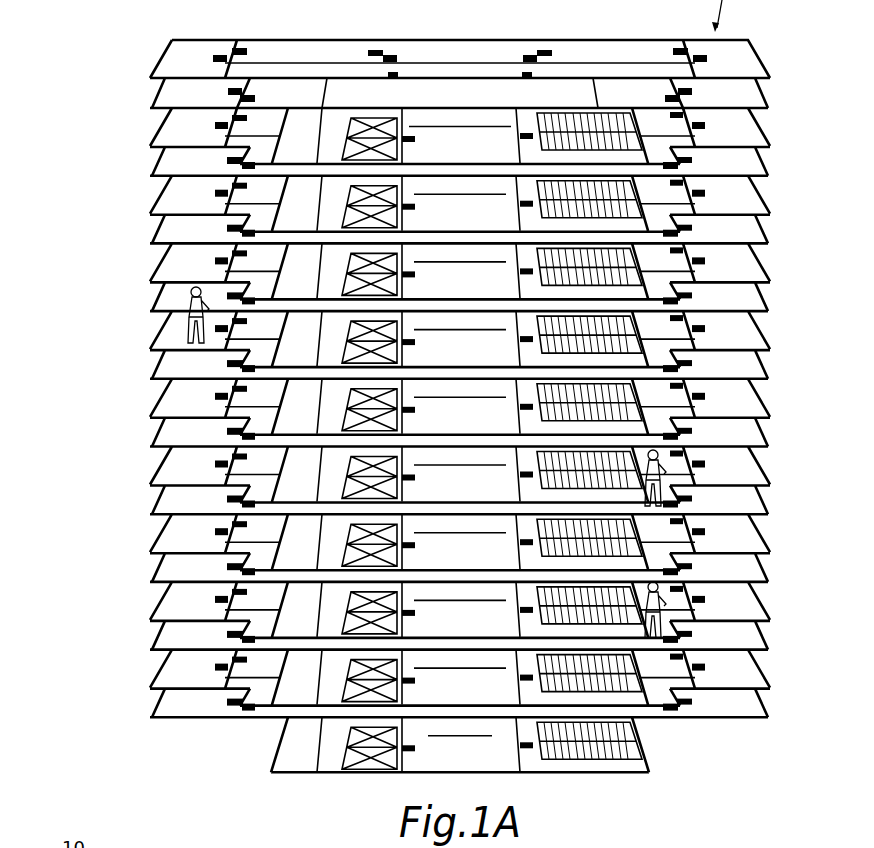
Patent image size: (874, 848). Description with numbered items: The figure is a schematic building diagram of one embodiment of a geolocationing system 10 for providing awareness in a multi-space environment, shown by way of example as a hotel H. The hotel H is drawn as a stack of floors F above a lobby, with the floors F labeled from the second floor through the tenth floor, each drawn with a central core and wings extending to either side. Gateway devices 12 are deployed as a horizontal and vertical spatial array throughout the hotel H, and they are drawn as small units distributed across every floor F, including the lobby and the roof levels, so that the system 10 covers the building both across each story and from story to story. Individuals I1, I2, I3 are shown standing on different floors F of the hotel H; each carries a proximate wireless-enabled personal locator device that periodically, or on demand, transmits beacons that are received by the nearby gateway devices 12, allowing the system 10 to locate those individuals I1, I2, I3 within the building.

The geolocationing system 10 is at (80, 98).
The gateway devices 12 is at (368, 52).
The hotel H is at (772, 25).
The individual I1 is at (187, 322).
The individual I2 is at (665, 506).
The individual I3 is at (665, 638).
The floors F is at (822, 847).